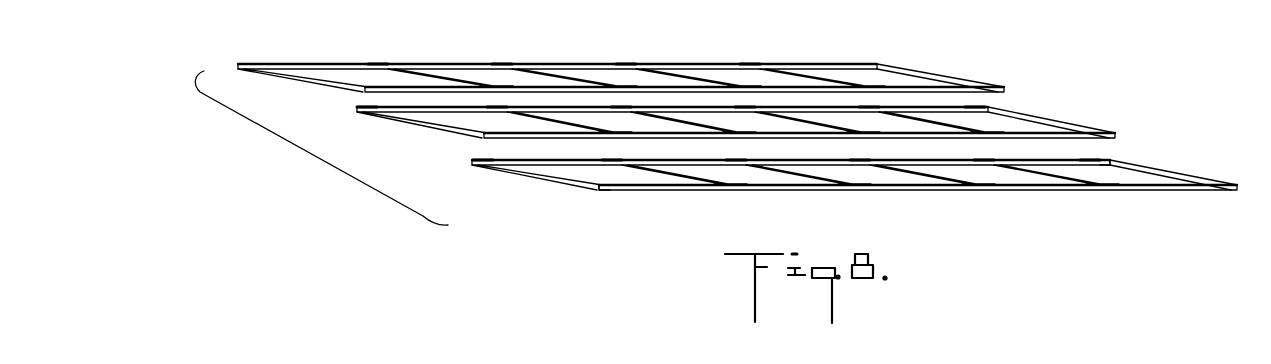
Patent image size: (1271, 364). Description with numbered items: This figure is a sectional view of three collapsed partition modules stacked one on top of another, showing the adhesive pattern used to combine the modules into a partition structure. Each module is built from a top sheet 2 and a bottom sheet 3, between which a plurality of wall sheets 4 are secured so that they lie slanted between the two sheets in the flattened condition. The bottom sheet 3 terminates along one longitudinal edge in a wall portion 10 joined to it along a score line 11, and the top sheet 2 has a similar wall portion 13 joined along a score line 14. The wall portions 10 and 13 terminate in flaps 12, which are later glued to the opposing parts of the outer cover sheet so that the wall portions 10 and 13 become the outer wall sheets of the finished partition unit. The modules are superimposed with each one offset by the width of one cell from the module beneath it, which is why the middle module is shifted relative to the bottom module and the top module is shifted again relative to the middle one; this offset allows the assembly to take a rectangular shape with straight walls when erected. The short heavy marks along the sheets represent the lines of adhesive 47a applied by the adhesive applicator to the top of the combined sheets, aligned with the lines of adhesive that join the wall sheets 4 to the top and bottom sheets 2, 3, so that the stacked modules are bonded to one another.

The top sheet 2 is at (671, 157).
The bottom sheet 3 is at (772, 190).
The wall sheet 4 is at (664, 177).
The wall portion 10 is at (310, 82).
The score line 11 is at (603, 191).
The flap 12 is at (741, 122).
The wall portion 13 is at (1162, 168).
The score line 14 is at (1112, 160).
The lines of adhesive 47a is at (358, 106).